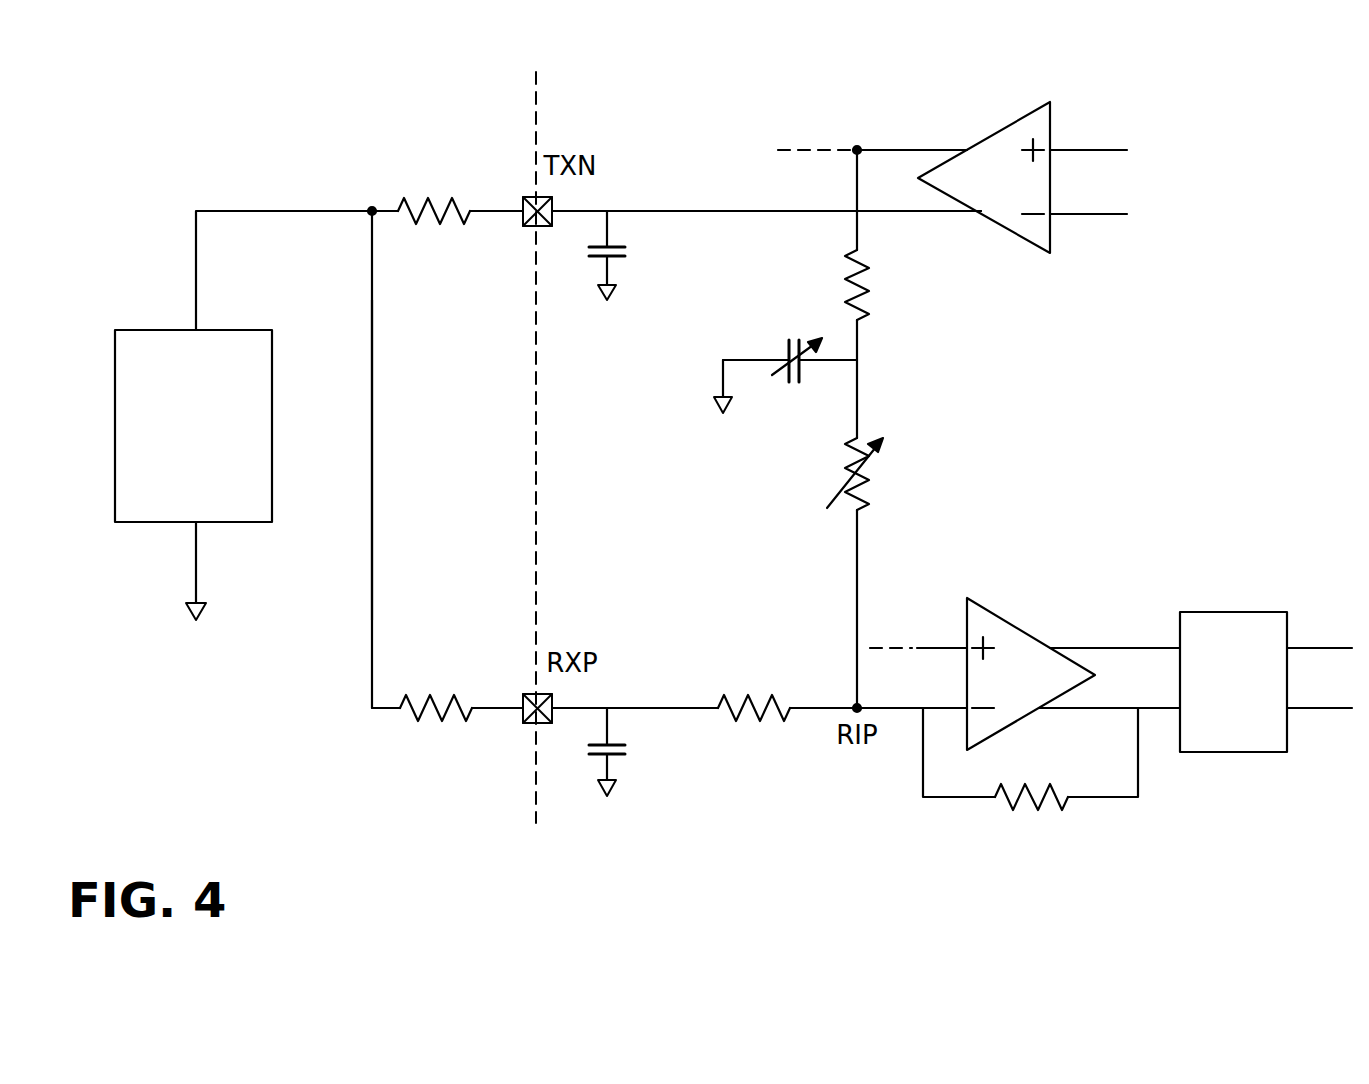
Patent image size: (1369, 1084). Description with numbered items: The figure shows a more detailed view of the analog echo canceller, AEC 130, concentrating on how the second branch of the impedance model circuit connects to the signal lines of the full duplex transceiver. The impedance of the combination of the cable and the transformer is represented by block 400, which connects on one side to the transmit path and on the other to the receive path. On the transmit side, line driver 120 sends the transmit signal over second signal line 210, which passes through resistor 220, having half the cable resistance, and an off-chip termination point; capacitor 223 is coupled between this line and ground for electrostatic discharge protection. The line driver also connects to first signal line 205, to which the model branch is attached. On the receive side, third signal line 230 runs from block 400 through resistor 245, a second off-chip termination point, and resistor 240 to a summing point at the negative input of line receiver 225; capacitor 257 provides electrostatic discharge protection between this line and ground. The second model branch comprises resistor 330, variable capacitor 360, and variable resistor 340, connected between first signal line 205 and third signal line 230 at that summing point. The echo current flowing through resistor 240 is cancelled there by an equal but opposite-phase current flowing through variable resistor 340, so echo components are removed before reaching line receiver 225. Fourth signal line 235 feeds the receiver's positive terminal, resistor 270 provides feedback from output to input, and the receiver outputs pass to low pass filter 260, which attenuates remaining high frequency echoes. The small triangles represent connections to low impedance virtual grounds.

The block 400 is at (160, 328).
The resistor 220 is at (430, 197).
The third signal line 230 is at (370, 526).
The capacitor 223 is at (625, 254).
The second signal line 210 is at (713, 210).
The first signal line 205 is at (880, 148).
The line driver 120 is at (1050, 178).
The resistor 330 is at (872, 282).
The variable capacitor 360 is at (802, 373).
The variable resistor 340 is at (870, 492).
The AEC 130 is at (1178, 367).
The resistor 245 is at (428, 694).
The capacitor 257 is at (626, 752).
The resistor 240 is at (746, 694).
The fourth signal line 235 is at (918, 646).
The line receiver 225 is at (1097, 675).
The low pass filter 260 is at (1250, 611).
The resistor 270 is at (1040, 812).